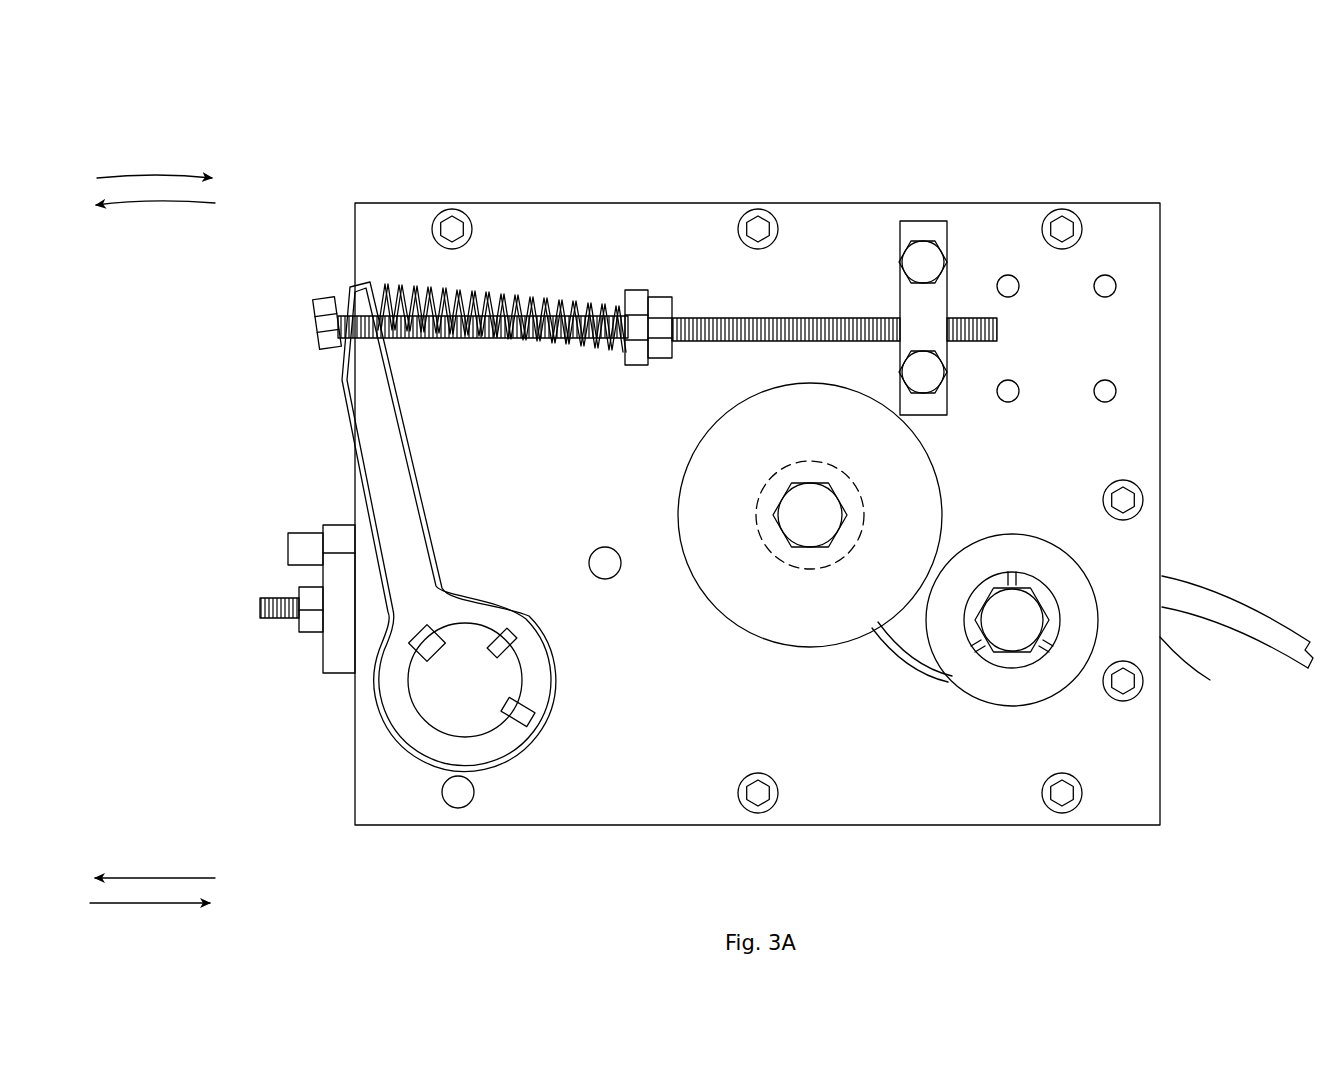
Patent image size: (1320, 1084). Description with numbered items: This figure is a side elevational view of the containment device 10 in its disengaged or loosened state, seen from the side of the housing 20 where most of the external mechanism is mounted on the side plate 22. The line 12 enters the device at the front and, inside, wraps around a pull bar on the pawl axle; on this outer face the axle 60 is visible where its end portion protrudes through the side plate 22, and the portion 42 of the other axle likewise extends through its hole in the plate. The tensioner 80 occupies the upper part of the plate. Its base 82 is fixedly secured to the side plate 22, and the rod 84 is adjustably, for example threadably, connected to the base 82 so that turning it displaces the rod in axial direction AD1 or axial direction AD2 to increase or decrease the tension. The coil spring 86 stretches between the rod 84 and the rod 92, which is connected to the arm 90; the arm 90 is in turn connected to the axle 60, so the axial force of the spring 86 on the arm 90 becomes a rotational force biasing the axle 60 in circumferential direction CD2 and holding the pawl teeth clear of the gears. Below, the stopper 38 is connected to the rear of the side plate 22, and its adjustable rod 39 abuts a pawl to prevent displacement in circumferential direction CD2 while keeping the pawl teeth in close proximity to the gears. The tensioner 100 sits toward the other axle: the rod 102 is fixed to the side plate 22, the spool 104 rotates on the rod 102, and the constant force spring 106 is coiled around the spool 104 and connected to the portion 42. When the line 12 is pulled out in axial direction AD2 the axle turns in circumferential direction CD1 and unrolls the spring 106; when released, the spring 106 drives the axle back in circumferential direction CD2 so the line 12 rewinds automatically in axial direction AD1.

The containment device 10 is at (272, 86).
The line 12 is at (1188, 605).
The housing 20 is at (1124, 226).
The side plate 22 is at (1133, 252).
The stopper 38 is at (337, 657).
The rod 39 is at (275, 598).
The portion 42 is at (758, 497).
The axle 60 is at (478, 710).
The tensioner 80 is at (722, 218).
The base 82 is at (921, 235).
The rod 84 is at (711, 318).
The spring 86 is at (580, 300).
The arm 90 is at (365, 377).
The rod 92 is at (410, 288).
The tensioner 100 is at (1107, 628).
The rod 102 is at (1016, 628).
The spool 104 is at (1001, 704).
The spring 106 is at (890, 648).
The circumferential direction CD1 is at (163, 173).
The circumferential direction CD2 is at (192, 203).
The axial direction AD1 is at (128, 878).
The axial direction AD2 is at (152, 903).